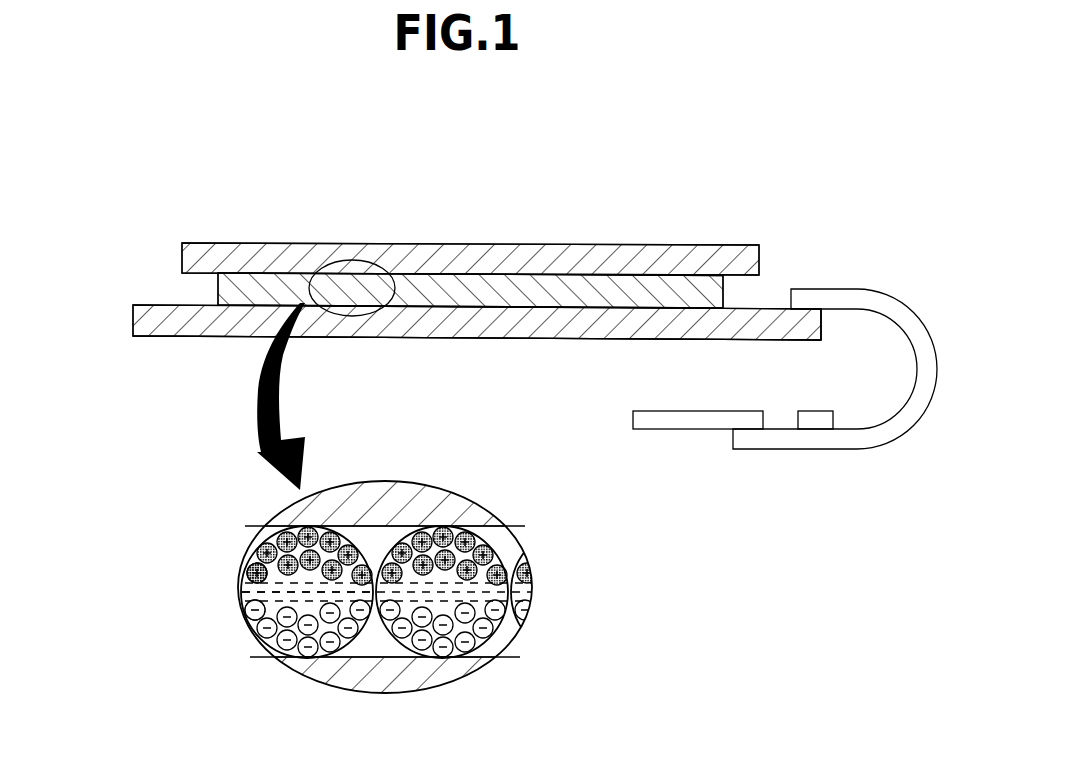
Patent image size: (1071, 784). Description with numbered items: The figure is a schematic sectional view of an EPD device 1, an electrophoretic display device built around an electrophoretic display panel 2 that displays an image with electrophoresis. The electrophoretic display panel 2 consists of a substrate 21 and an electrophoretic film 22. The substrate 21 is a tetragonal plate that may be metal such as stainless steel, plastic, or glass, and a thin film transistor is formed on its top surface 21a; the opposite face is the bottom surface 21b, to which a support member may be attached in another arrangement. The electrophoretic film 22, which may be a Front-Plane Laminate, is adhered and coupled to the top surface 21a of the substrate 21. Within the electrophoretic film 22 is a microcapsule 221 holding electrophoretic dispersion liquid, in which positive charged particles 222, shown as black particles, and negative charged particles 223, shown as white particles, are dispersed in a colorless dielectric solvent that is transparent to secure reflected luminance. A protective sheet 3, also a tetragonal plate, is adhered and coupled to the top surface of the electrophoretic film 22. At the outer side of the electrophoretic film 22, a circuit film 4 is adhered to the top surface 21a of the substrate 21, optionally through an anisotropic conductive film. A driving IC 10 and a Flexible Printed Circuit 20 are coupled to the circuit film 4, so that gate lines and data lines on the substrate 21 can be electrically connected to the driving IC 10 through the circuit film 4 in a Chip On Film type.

The EPD device 1 is at (858, 167).
The electrophoretic display panel 2 is at (83, 275).
The protective sheet 3 is at (185, 257).
The circuit film 4 is at (888, 433).
The driving IC 10 is at (816, 424).
The Flexible Printed Circuit 20 is at (691, 422).
The substrate 21 is at (133, 326).
The top surface of the substrate 21a is at (761, 307).
The bottom surface of the substrate 21b is at (506, 339).
The electrophoretic film 22 is at (222, 292).
The microcapsule 221 is at (242, 592).
The positive charged particles 222 is at (257, 545).
The negative charged particles 223 is at (247, 635).